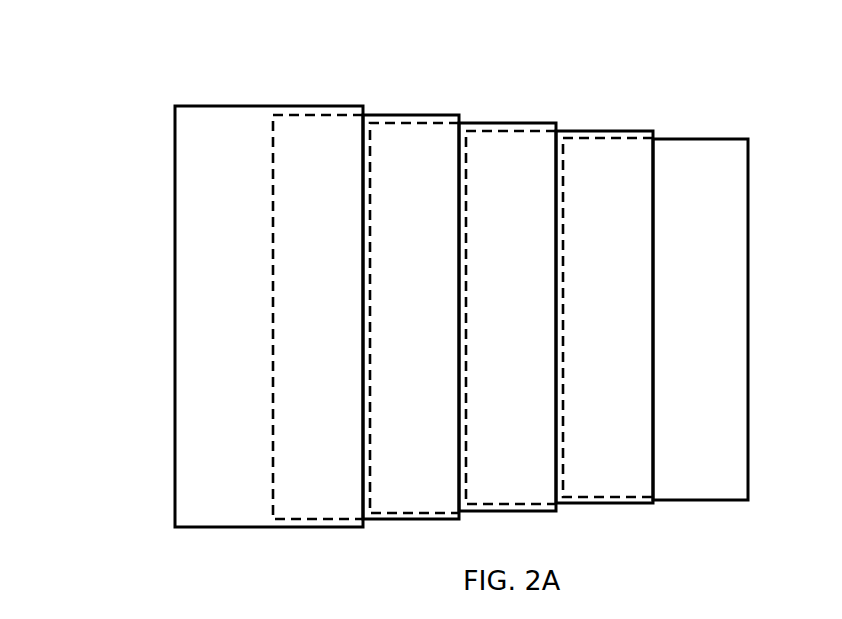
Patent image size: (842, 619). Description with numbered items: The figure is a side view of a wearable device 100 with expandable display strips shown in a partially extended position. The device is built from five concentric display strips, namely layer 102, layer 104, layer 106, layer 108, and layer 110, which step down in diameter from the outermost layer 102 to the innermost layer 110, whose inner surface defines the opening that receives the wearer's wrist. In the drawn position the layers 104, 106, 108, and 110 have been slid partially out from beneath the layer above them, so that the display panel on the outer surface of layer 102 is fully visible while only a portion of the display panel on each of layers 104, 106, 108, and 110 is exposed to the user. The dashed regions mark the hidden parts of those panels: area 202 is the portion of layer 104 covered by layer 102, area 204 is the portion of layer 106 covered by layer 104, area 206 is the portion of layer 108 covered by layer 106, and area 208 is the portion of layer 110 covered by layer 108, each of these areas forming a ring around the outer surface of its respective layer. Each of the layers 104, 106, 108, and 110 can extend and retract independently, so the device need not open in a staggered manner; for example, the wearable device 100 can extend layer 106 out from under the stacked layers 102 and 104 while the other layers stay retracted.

The wearable device 100 is at (131, 118).
The layer 102 is at (275, 107).
The layer 104 is at (398, 115).
The layer 106 is at (503, 122).
The layer 108 is at (590, 131).
The layer 110 is at (695, 139).
The area 202 is at (335, 246).
The area 204 is at (434, 264).
The area 206 is at (528, 284).
The area 208 is at (627, 309).